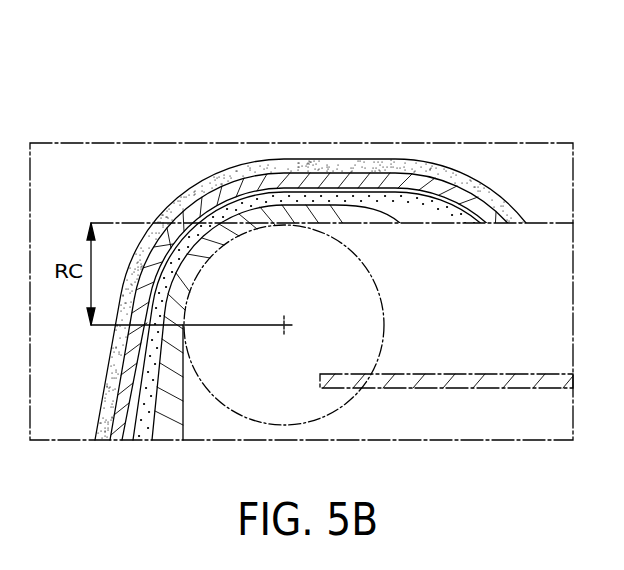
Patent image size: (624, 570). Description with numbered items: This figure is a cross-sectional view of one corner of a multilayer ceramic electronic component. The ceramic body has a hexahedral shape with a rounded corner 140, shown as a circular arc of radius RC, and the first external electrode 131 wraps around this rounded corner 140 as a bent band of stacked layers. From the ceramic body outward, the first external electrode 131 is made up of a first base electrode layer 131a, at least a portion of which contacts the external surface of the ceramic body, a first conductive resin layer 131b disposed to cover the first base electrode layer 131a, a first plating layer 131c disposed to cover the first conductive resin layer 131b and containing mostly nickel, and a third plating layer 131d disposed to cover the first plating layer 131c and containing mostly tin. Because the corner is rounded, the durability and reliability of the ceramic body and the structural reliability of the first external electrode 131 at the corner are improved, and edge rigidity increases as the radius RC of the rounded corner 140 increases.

The first external electrode 131 is at (482, 61).
The first base electrode layer 131a is at (272, 221).
The first conductive resin layer 131b is at (321, 190).
The first plating layer 131c is at (393, 178).
The third plating layer 131d is at (455, 172).
The rounded corner 140 is at (398, 302).